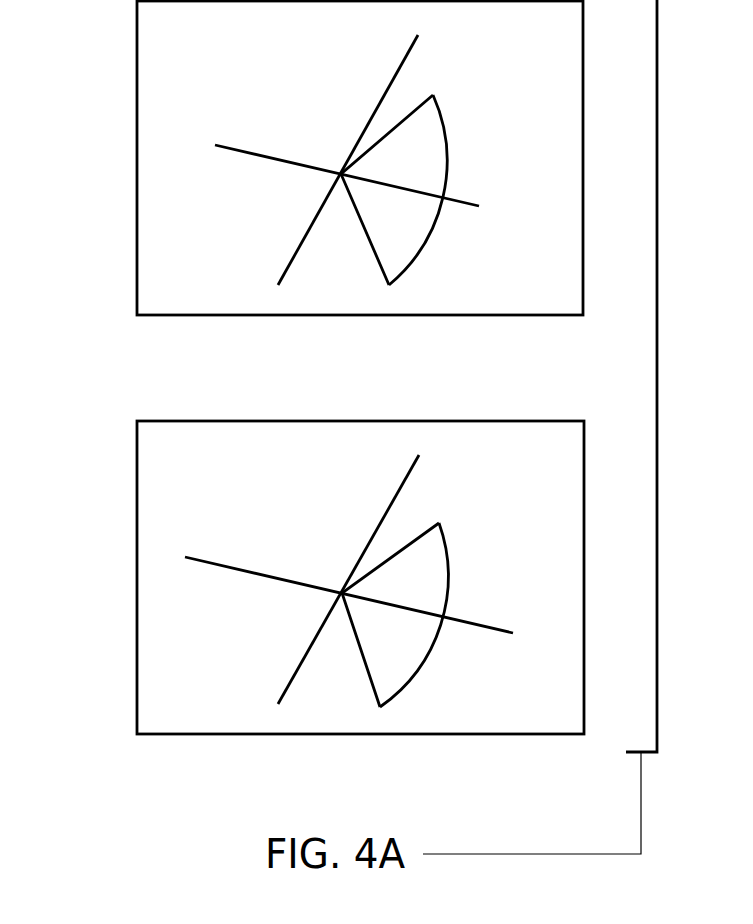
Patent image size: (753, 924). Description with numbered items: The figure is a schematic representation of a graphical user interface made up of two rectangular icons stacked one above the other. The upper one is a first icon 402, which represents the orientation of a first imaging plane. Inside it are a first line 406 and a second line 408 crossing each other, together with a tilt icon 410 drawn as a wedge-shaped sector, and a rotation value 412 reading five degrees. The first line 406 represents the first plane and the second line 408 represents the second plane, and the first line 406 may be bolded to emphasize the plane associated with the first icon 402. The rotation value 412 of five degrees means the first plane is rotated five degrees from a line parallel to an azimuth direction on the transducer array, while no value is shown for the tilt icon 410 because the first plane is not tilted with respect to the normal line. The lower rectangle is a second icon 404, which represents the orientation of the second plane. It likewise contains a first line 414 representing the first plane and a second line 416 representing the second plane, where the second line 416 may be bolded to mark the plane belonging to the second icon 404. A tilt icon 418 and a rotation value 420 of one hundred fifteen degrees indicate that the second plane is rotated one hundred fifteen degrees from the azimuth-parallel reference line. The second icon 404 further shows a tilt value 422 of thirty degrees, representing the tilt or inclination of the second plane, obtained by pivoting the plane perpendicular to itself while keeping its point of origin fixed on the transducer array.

The first icon 402 is at (137, 155).
The second icon 404 is at (137, 572).
The first line 406 is at (245, 157).
The second line 408 is at (406, 57).
The tilt icon 410 is at (370, 248).
The rotation value 412 is at (193, 137).
The first line 414 is at (253, 575).
The second line 416 is at (404, 478).
The tilt icon 418 is at (425, 663).
The rotation value 420 is at (467, 449).
The tilt value 422 is at (348, 723).